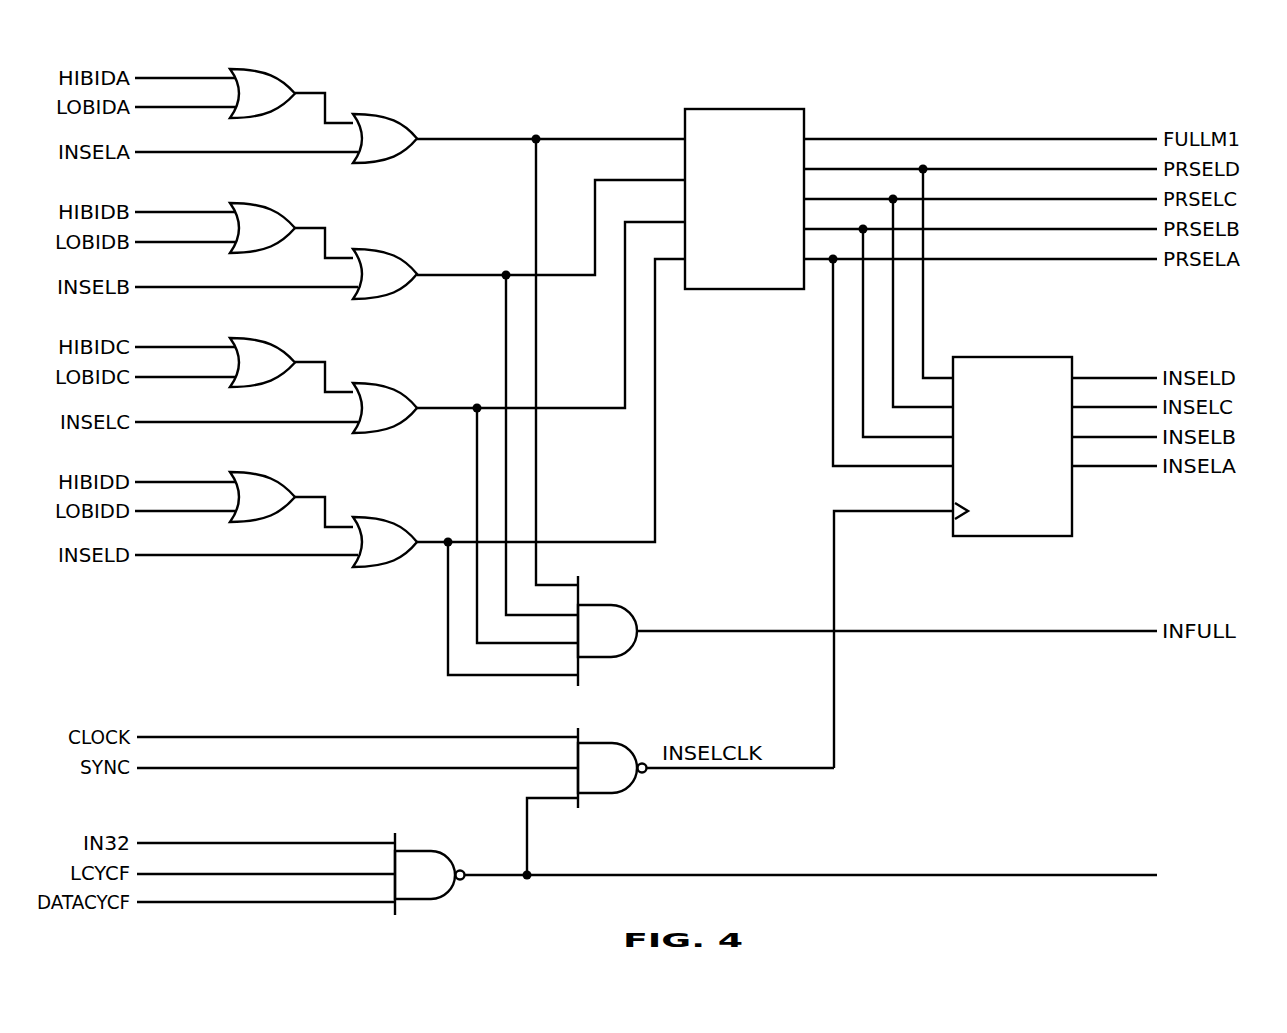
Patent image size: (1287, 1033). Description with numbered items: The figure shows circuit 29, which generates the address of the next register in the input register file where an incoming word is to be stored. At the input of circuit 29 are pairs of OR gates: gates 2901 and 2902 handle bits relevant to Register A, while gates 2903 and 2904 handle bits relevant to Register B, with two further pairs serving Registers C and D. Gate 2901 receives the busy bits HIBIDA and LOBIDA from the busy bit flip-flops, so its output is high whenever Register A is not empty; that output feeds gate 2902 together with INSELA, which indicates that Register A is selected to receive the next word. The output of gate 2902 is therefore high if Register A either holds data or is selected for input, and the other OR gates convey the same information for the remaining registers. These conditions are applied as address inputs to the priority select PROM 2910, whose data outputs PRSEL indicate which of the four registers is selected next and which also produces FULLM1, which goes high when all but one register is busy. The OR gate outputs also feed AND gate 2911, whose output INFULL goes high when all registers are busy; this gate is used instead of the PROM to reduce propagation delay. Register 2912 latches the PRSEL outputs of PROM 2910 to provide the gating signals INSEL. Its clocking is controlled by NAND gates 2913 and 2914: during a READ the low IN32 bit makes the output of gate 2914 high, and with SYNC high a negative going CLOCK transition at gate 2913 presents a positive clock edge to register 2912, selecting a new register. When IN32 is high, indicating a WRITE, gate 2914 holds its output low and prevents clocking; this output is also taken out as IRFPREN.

The OR gate 2901 is at (290, 81).
The OR gate 2902 is at (412, 127).
The OR gate 2903 is at (290, 218).
The OR gate 2904 is at (412, 263).
The priority select PROM 2910 is at (741, 109).
The AND gate 2911 is at (637, 614).
The register 2912 is at (1010, 357).
The NAND gate 2913 is at (648, 775).
The NAND gate 2914 is at (427, 851).
The circuit 29 is at (1023, 897).